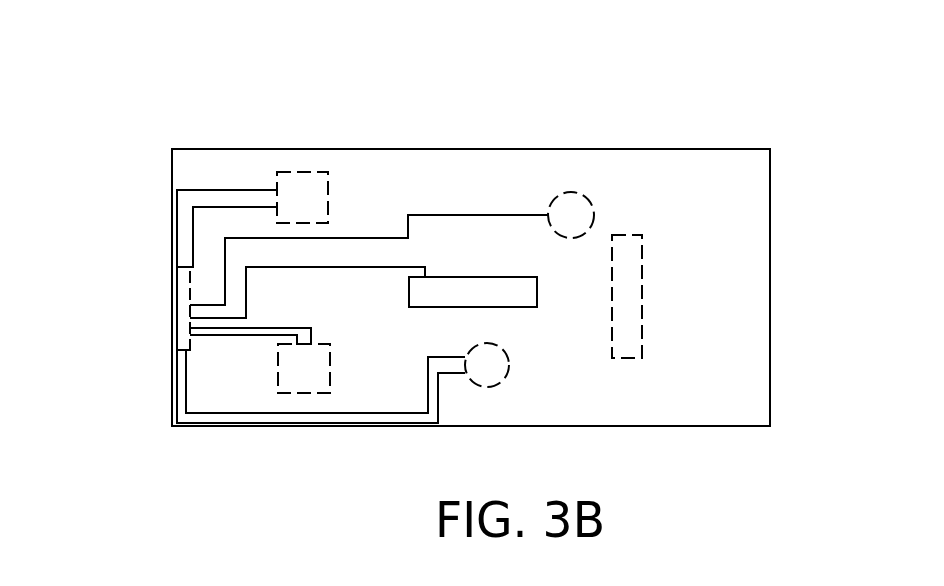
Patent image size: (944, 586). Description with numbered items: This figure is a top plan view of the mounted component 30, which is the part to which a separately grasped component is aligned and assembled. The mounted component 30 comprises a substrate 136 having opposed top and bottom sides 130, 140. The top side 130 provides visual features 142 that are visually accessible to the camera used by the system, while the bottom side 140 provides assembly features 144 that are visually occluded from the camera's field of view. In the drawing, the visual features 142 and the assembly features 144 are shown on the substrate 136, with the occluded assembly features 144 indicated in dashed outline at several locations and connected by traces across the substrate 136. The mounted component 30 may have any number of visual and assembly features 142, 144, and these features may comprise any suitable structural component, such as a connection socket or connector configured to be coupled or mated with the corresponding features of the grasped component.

The mounted component 30 is at (180, 140).
The top side 130 is at (702, 183).
The substrate 136 is at (472, 147).
The bottom side 140 is at (667, 428).
The visual features 142 is at (452, 290).
The assembly feature 144 is at (307, 200).